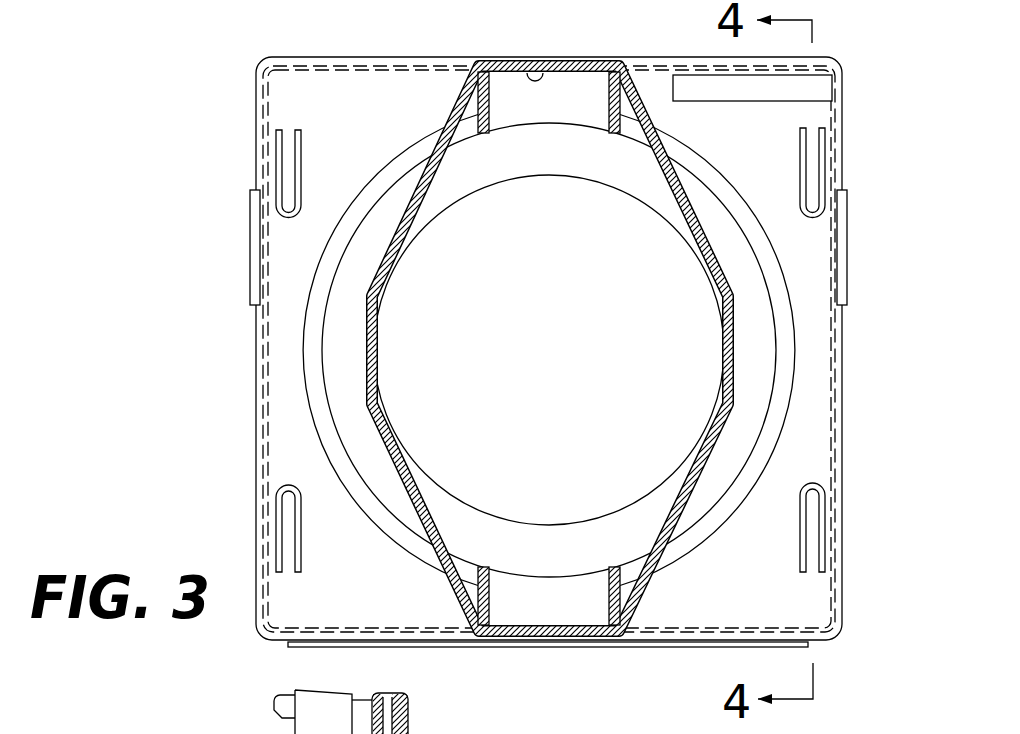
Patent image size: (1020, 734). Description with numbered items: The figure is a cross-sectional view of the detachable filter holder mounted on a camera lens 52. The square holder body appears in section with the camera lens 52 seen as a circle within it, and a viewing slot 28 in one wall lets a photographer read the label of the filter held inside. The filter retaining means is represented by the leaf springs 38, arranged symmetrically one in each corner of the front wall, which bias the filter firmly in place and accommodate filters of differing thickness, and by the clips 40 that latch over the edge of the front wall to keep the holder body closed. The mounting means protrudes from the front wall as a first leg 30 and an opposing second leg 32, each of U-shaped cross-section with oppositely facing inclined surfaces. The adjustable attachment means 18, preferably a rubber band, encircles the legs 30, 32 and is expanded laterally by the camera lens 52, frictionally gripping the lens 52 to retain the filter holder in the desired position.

The adjustable attachment means 18 is at (463, 592).
The viewing slot 28 is at (731, 104).
The first leg 30 is at (525, 60).
The second leg 32 is at (609, 603).
The leaf spring 38 is at (813, 531).
The clip 40 is at (848, 247).
The camera lens 52 is at (466, 214).